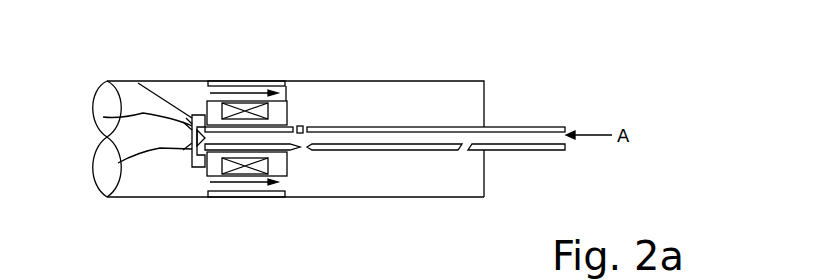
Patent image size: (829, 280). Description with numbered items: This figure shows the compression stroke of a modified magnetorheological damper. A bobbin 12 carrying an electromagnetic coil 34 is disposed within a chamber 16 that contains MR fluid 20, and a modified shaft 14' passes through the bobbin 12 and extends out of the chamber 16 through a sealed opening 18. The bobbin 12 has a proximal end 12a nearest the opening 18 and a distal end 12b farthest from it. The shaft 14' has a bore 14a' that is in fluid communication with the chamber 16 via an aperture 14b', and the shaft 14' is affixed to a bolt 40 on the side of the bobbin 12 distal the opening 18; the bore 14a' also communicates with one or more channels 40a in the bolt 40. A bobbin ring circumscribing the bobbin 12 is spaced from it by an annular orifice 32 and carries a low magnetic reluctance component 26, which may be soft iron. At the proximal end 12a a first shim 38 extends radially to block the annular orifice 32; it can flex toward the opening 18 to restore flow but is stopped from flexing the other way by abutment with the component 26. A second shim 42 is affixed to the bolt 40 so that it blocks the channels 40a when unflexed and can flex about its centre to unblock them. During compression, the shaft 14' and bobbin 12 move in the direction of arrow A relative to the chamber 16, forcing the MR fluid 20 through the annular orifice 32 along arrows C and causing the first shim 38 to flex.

The bobbin 12 is at (207, 172).
The proximal end 12a is at (287, 160).
The distal end 12b is at (207, 102).
The modified shaft 14' is at (436, 96).
The bore 14a' is at (289, 167).
The aperture 14b' is at (297, 113).
The chamber 16 is at (427, 198).
The opening 18 is at (485, 151).
The MR fluid 20 is at (433, 95).
The low magnetic reluctance component 26 is at (227, 197).
The annular orifice 32 is at (284, 81).
The electromagnetic coil 34 is at (231, 104).
The first shim 38 is at (290, 100).
The bolt 40 is at (138, 83).
The channels 40a is at (103, 117).
The second shim 42 is at (193, 138).